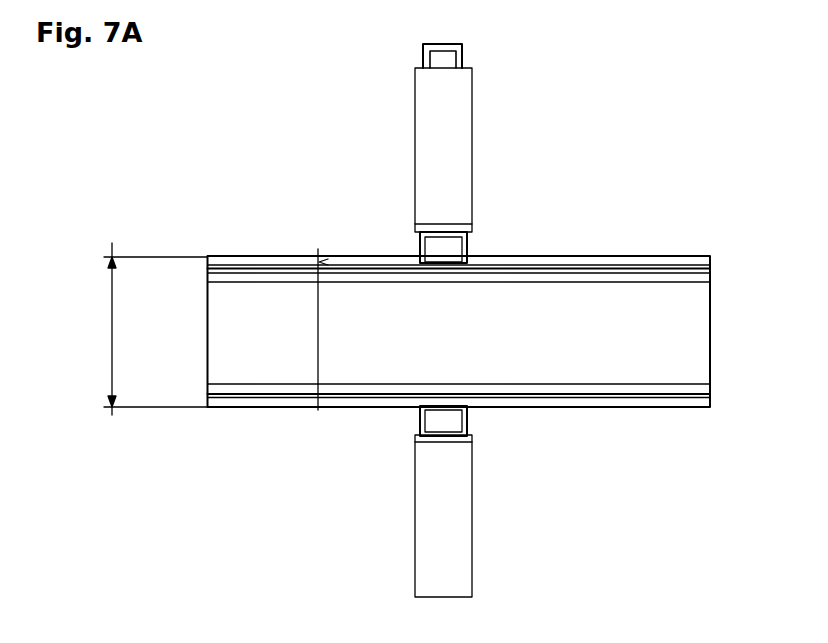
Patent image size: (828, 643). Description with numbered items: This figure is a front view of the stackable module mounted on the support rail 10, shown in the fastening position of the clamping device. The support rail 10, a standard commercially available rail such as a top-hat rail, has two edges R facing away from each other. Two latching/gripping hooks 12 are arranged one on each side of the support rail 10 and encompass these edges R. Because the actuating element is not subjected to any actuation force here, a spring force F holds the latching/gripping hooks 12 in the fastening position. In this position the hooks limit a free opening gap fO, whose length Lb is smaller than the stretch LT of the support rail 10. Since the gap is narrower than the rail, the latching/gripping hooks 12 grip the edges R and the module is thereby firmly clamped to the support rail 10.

The support rail 10 is at (252, 342).
The latching/gripping hooks 12 is at (415, 258).
The spring force F is at (443, 258).
The stretch of the support rail LT is at (112, 316).
The length of the free opening gap in the fastening position Lb is at (318, 303).
The free opening gap fO is at (474, 274).
The edges R is at (663, 256).